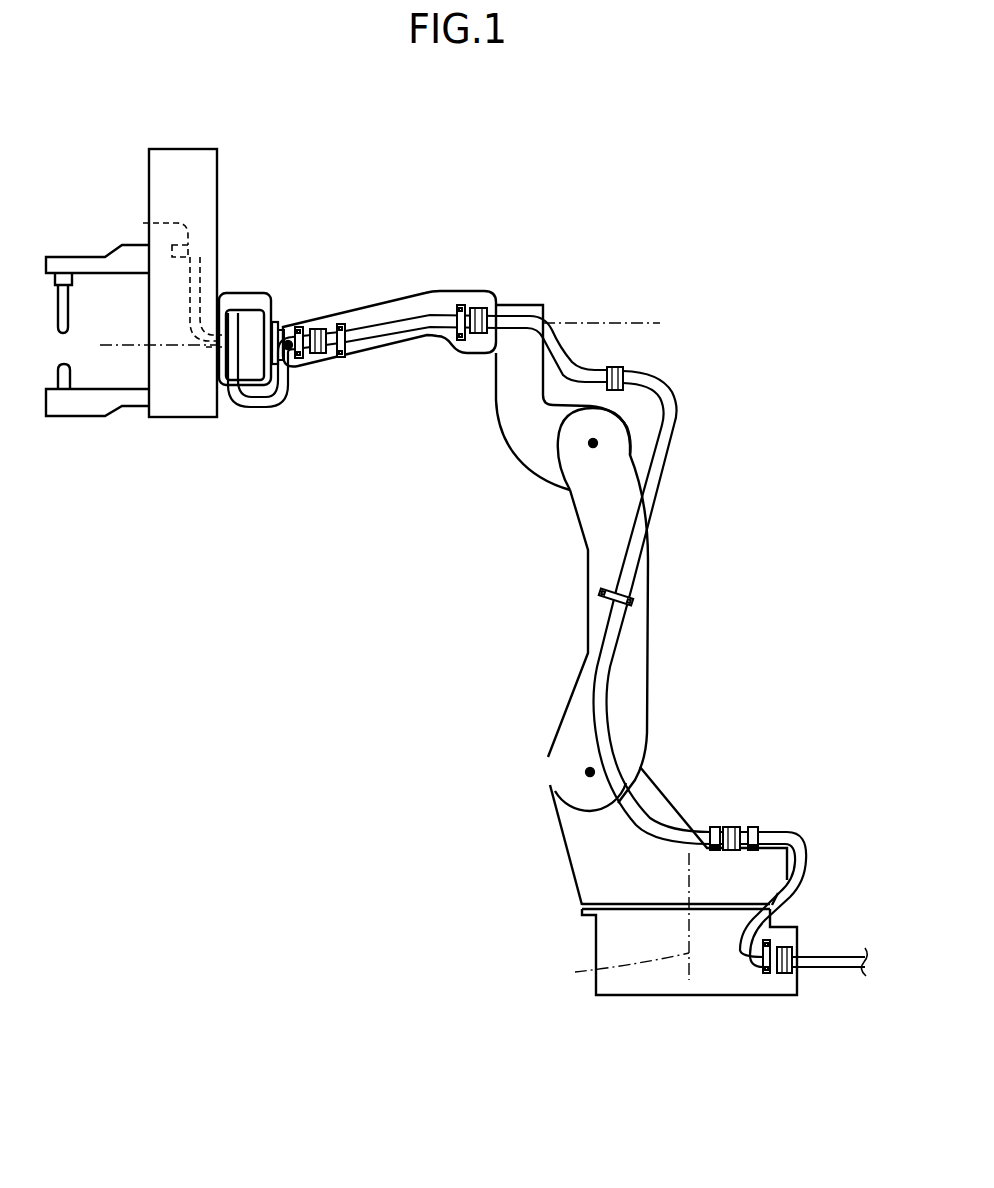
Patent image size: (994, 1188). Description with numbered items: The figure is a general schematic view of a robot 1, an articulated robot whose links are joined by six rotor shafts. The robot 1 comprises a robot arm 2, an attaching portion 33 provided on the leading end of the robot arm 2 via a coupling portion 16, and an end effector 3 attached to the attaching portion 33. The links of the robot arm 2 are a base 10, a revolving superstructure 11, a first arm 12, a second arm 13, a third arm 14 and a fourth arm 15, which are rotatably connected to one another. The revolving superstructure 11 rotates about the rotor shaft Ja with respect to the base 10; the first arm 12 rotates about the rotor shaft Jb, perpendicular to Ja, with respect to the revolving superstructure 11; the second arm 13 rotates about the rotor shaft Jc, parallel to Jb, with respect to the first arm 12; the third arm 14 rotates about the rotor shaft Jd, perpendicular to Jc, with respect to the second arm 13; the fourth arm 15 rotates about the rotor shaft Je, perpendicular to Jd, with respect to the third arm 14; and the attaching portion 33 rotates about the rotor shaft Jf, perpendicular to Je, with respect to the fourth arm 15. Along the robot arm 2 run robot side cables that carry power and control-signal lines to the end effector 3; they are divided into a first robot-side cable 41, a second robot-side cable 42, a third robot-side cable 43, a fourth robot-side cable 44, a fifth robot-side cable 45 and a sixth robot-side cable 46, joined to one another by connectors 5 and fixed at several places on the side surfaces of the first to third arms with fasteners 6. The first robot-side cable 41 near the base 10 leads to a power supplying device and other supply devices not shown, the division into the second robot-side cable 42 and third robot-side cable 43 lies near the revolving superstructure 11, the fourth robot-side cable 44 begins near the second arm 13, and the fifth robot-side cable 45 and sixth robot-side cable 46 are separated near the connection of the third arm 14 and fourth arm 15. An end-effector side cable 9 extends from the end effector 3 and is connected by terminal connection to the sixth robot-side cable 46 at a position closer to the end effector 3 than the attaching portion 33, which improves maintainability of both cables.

The robot 1 is at (508, 546).
The robot arm 2 is at (547, 642).
The end effector 3 is at (183, 149).
The connector 5 is at (316, 328).
The fastener 6 is at (298, 358).
The end-effector side cable 9 is at (143, 223).
The base 10 is at (596, 941).
The revolving superstructure 11 is at (565, 849).
The first arm 12 is at (650, 668).
The second arm 13 is at (496, 412).
The third arm 14 is at (397, 350).
The fourth arm 15 is at (283, 333).
The coupling portion 16 is at (275, 323).
The attaching portion 33 is at (251, 293).
The first robot-side cable 41 is at (842, 956).
The second robot-side cable 42 is at (814, 862).
The third robot-side cable 43 is at (665, 468).
The fourth robot-side cable 44 is at (553, 357).
The fifth robot-side cable 45 is at (378, 333).
The sixth robot-side cable 46 is at (265, 408).
The rotor shaft Ja is at (620, 917).
The rotor shaft Jb is at (588, 771).
The rotor shaft Jc is at (590, 445).
The rotor shaft Jd is at (592, 323).
The rotor shaft Je is at (290, 355).
The rotor shaft Jf is at (120, 344).